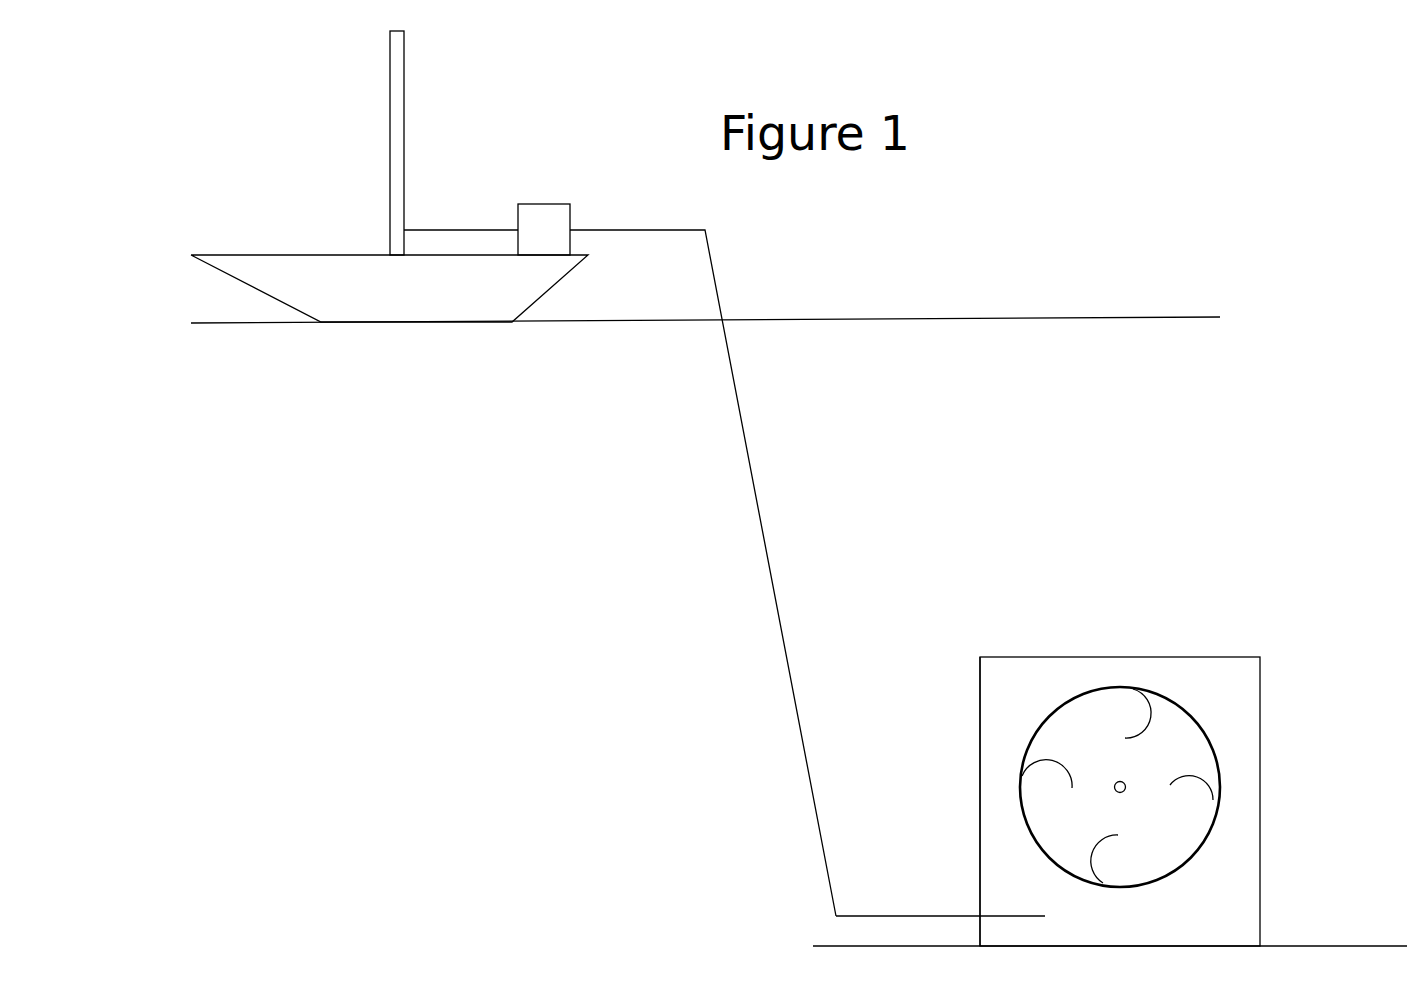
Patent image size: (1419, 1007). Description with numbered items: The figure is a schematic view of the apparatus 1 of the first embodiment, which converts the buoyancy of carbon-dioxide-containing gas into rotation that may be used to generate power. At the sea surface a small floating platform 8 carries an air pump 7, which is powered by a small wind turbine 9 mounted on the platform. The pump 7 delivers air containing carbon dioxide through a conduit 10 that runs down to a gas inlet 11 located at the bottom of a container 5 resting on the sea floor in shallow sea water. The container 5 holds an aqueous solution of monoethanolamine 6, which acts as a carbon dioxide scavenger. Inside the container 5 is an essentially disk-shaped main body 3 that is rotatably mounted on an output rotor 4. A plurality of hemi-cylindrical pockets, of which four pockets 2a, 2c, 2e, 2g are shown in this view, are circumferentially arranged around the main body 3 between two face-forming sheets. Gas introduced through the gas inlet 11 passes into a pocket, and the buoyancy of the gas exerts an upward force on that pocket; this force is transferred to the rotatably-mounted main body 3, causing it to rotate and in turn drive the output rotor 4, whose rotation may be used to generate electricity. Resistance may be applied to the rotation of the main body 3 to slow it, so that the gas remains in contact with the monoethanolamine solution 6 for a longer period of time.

The apparatus 1 is at (680, 571).
The pocket 2a is at (1030, 767).
The pocket 2c is at (1142, 690).
The pocket 2e is at (1213, 802).
The pocket 2g is at (1112, 853).
The main body 3 is at (1072, 698).
The output rotor 4 is at (1119, 781).
The container 5 is at (1263, 693).
The aqueous solution of monoethanolamine 6 is at (993, 698).
The air pump 7 is at (557, 213).
The floating platform 8 is at (319, 278).
The wind turbine 9 is at (393, 95).
The conduit 10 is at (745, 448).
The gas inlet 11 is at (1037, 907).